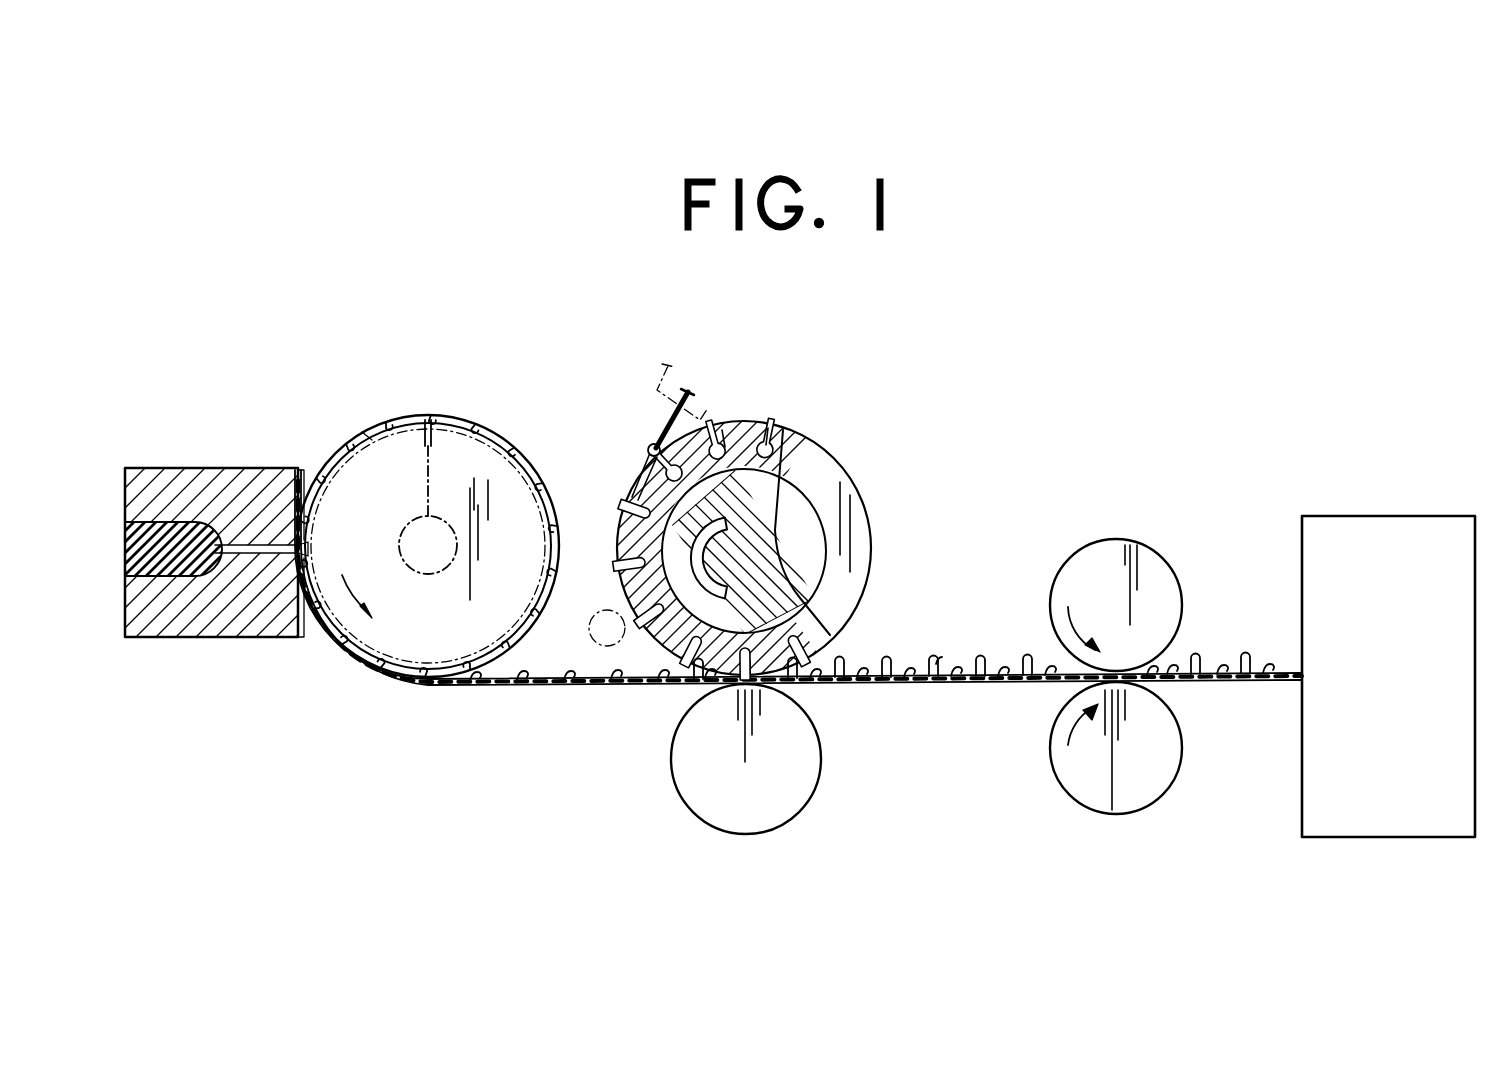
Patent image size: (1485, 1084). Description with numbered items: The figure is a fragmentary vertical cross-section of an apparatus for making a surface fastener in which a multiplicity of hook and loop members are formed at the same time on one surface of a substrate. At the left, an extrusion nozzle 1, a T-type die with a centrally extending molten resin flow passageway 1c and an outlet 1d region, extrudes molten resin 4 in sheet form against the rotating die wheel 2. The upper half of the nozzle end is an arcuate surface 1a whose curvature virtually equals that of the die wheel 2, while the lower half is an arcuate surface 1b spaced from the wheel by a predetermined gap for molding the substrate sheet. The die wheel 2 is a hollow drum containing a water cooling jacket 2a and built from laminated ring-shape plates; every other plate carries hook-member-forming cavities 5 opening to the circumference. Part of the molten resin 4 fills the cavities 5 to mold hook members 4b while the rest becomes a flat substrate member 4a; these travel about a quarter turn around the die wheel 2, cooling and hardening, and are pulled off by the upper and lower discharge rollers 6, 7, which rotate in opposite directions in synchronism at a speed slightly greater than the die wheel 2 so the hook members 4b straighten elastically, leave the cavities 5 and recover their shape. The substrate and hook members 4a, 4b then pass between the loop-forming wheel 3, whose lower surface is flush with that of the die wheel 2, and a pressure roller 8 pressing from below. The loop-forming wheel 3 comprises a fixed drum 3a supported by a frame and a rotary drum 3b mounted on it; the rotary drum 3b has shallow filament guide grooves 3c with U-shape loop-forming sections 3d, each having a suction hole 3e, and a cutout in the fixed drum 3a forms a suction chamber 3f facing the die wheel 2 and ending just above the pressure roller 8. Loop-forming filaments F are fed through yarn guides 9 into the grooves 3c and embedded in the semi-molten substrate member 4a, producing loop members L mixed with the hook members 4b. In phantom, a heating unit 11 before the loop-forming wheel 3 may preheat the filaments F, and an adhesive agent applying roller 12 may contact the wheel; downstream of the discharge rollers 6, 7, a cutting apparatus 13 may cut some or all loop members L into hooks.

The extrusion nozzle 1 is at (166, 486).
The arcuate surface 1a is at (303, 488).
The arcuate surface 1b is at (300, 600).
The molten resin flow passageway 1c is at (228, 562).
The nozzle outlet 1d is at (318, 547).
The die wheel 2 is at (447, 418).
The water cooling jacket 2a is at (500, 440).
The loop-forming wheel 3 is at (888, 507).
The fixed drum 3a is at (813, 488).
The rotary drum 3b is at (786, 428).
The filament guide grooves 3c is at (832, 648).
The loop-forming sections 3d is at (771, 428).
The suction hole 3e is at (729, 427).
The suction chamber 3f is at (641, 495).
The molten resin 4 is at (162, 578).
The substrate member 4a is at (598, 690).
The hook members 4b is at (522, 672).
The hook-member-forming cavities 5 is at (378, 418).
The upper discharge roller 6 is at (1084, 566).
The lower discharge roller 7 is at (1070, 787).
The pressure roller 8 is at (674, 786).
The yarn guides 9 is at (650, 448).
The heating unit 11 is at (655, 391).
The adhesive agent applying roller 12 is at (604, 611).
The cutting apparatus 13 is at (1352, 520).
The loop-forming filaments F is at (686, 392).
The loop members L is at (936, 664).